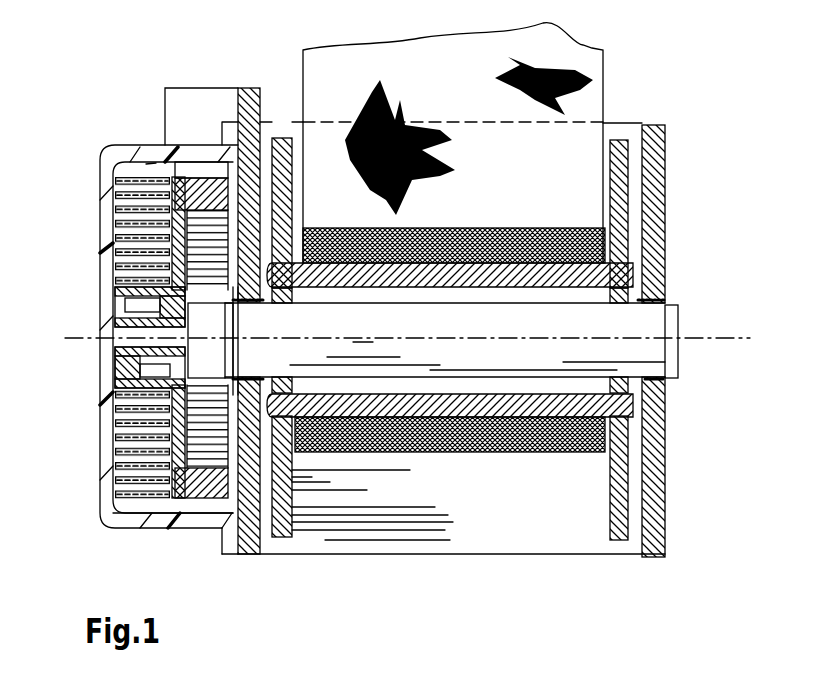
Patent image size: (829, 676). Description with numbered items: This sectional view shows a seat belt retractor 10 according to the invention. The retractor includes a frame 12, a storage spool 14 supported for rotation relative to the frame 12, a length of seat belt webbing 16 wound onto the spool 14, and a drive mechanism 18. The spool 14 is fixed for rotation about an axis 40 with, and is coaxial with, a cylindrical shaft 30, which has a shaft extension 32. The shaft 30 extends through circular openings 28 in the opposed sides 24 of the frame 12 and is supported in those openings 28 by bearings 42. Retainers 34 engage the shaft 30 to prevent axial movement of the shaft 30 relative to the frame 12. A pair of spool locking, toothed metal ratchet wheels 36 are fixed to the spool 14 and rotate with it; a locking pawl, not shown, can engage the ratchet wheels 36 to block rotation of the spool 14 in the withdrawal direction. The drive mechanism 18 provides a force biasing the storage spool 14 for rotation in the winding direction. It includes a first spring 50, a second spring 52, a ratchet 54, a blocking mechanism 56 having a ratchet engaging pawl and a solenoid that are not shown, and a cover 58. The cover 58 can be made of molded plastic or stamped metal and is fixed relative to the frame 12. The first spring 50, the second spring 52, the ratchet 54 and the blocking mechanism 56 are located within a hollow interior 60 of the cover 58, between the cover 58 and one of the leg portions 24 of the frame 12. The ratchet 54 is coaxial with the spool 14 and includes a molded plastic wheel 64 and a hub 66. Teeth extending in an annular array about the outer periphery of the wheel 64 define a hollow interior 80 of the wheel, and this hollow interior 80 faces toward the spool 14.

The seat belt retractor 10 is at (661, 58).
The frame 12 is at (585, 562).
The storage spool 14 is at (480, 398).
The seat belt webbing 16 is at (430, 88).
The drive mechanism 18 is at (119, 70).
The opposed sides 24 is at (248, 88).
The circular openings 28 is at (245, 303).
The cylindrical shaft 30 is at (680, 347).
The shaft extension 32 is at (113, 342).
The retainers 34 is at (230, 297).
The ratchet wheels 36 is at (283, 138).
The axis 40 is at (706, 338).
The bearings 42 is at (243, 377).
The first spring 50 is at (115, 193).
The second spring 52 is at (190, 498).
The ratchet 54 is at (175, 514).
The blocking mechanism 56 is at (198, 165).
The cover 58 is at (108, 157).
The hollow interior 60 is at (122, 161).
The wheel 64 is at (212, 500).
The hub 66 is at (125, 378).
The hollow interior 80 is at (210, 381).